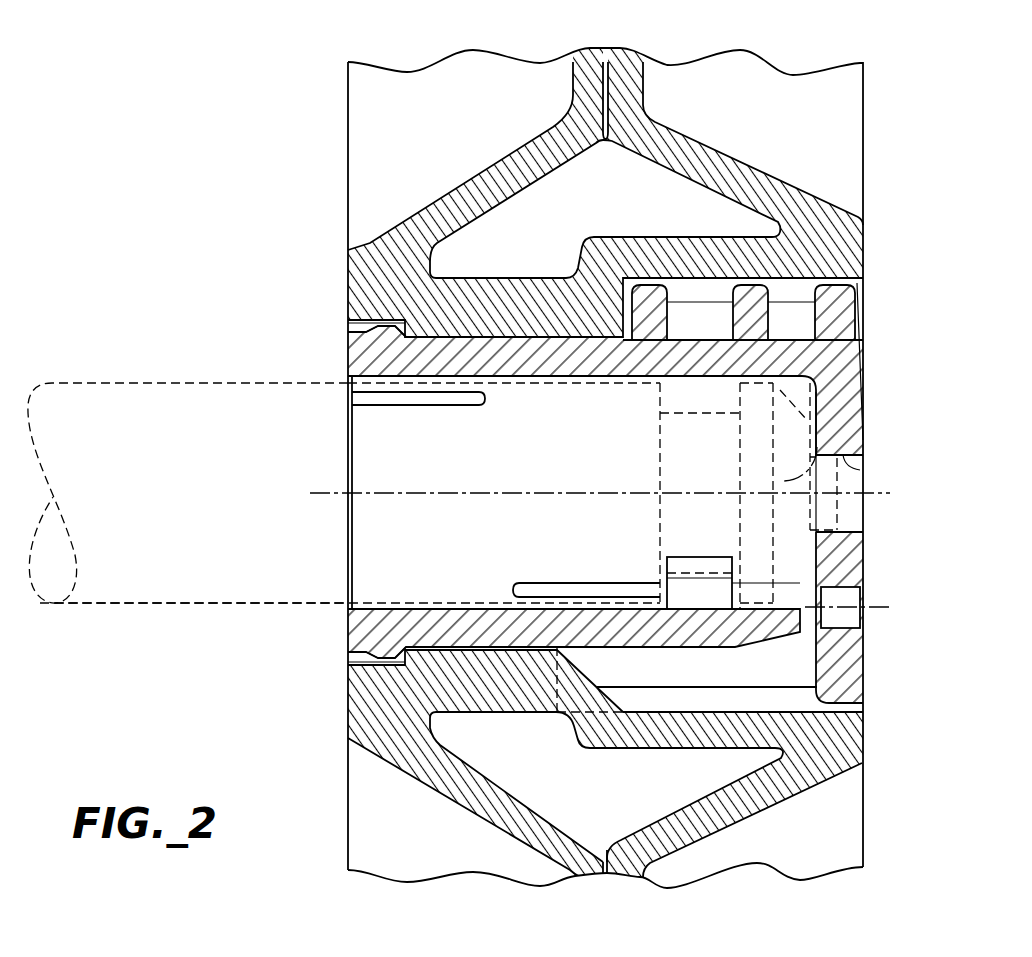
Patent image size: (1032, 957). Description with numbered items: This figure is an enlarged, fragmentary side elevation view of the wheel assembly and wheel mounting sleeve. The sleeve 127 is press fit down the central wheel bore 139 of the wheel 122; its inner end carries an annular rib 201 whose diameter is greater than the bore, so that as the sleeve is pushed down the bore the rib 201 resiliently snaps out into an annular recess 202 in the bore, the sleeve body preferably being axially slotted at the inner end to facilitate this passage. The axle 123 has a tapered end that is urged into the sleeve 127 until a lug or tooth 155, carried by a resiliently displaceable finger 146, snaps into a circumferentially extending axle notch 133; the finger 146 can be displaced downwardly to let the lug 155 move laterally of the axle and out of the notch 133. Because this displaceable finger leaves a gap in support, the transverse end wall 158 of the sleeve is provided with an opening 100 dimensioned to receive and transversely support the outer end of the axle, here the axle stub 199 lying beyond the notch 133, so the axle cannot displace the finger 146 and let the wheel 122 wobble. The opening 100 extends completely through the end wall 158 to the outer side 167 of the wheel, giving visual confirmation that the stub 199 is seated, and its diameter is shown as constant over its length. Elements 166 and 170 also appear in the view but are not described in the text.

The wheel 122 is at (888, 72).
The outer side of the wheel 167 is at (868, 152).
The housing 166 is at (347, 146).
The annular rib 201 is at (392, 323).
The annular recess 202 is at (348, 330).
The central wheel bore 139 is at (497, 337).
The sleeve 127 is at (346, 361).
The axle notch 133 is at (668, 413).
The transverse end wall 158 is at (866, 402).
The valve member 170 is at (817, 447).
The opening 100 is at (866, 470).
The axle stub 199 is at (868, 548).
The lug or tooth 155 is at (680, 557).
The resiliently displaceable finger 146 is at (735, 650).
The axle 123 is at (160, 610).